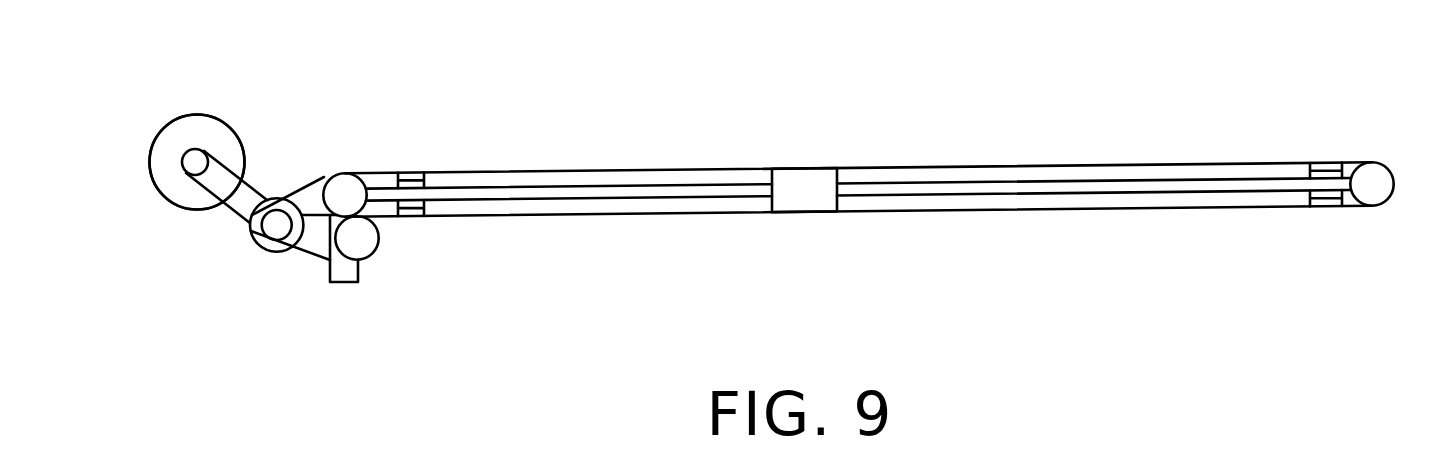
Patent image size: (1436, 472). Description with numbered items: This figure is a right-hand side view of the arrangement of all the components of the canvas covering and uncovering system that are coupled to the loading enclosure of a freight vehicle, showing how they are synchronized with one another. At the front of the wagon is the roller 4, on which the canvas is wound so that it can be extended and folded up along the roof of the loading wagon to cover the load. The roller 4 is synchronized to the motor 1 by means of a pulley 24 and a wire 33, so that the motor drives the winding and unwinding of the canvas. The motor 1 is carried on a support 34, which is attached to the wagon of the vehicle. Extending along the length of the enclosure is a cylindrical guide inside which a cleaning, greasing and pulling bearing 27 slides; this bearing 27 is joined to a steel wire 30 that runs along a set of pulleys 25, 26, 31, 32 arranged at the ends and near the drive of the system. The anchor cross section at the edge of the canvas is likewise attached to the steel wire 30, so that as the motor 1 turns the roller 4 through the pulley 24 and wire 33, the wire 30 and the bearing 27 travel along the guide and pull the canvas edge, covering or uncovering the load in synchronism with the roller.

The motor 1 is at (349, 283).
The roller 4 is at (180, 117).
The pulley 24 is at (166, 198).
The pulley 25 is at (342, 172).
The pulley 26 is at (1372, 162).
The cleaning, greasing and pulling bearing 27 is at (822, 169).
The steel wire 30 is at (757, 169).
The pulley 31 is at (259, 246).
The pulley 32 is at (373, 255).
The wire 33 is at (205, 150).
The support 34 is at (311, 228).